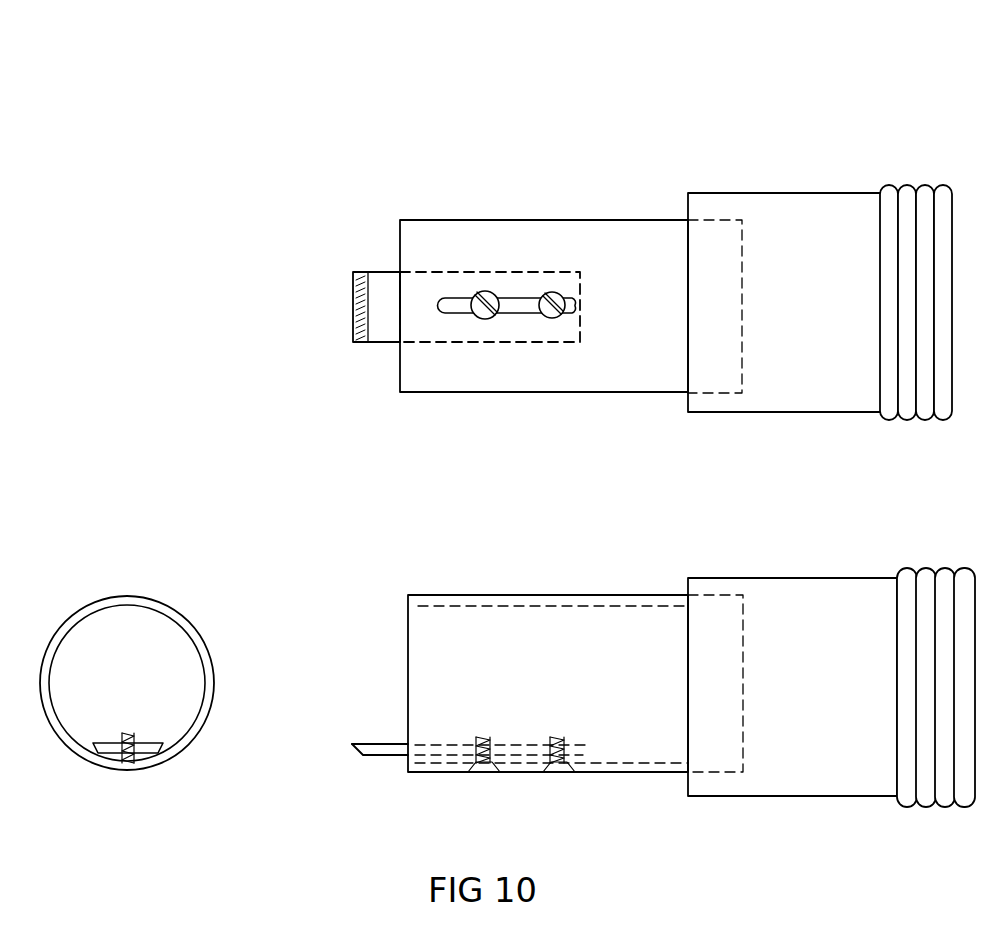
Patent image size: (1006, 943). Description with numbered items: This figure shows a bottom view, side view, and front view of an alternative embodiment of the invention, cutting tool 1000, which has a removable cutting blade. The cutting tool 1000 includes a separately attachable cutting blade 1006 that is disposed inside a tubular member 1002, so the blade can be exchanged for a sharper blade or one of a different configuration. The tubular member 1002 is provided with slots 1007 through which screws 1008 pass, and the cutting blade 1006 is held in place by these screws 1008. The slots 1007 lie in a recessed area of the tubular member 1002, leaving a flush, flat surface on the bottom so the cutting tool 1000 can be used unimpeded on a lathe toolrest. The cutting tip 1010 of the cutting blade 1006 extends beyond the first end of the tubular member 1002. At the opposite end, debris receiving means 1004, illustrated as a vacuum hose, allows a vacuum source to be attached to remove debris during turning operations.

The cutting tool 1000 is at (416, 63).
The tubular member 1002 is at (610, 232).
The debris receiving means 1004 is at (918, 187).
The cutting blade 1006 is at (378, 270).
The slots 1007 is at (507, 303).
The screws 1008 is at (473, 307).
The cutting tip 1010 is at (350, 743).